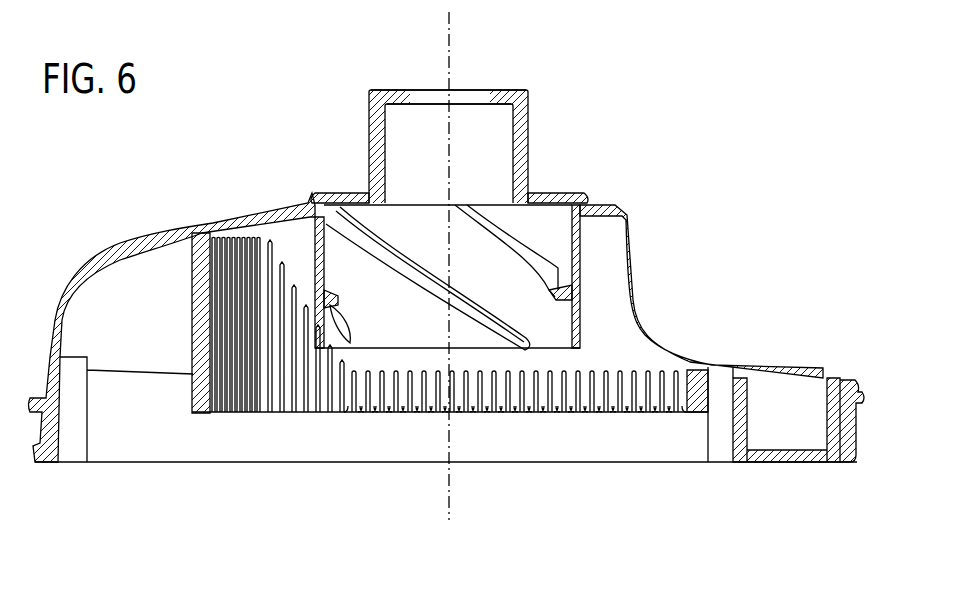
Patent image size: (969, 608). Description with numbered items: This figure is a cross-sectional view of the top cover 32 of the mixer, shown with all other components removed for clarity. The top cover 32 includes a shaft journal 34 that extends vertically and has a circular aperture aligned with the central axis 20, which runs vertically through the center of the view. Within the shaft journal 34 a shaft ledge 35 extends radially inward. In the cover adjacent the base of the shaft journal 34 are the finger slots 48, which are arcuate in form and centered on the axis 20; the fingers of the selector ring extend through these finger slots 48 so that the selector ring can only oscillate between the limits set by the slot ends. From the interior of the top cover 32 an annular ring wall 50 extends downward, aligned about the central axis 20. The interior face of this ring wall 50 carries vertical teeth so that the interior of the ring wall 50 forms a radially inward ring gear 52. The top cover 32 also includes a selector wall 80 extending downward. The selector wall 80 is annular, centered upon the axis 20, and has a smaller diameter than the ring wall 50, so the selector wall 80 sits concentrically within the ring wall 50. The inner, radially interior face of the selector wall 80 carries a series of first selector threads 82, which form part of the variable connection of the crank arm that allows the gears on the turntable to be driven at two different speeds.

The central axis 20 is at (450, 33).
The top cover 32 is at (152, 228).
The shaft journal 34 is at (530, 137).
The shaft ledge 35 is at (495, 92).
The finger slots 48 is at (543, 193).
The ring wall 50 is at (193, 323).
The ring gear 52 is at (308, 416).
The selector wall 80 is at (578, 315).
The first selector threads 82 is at (435, 290).